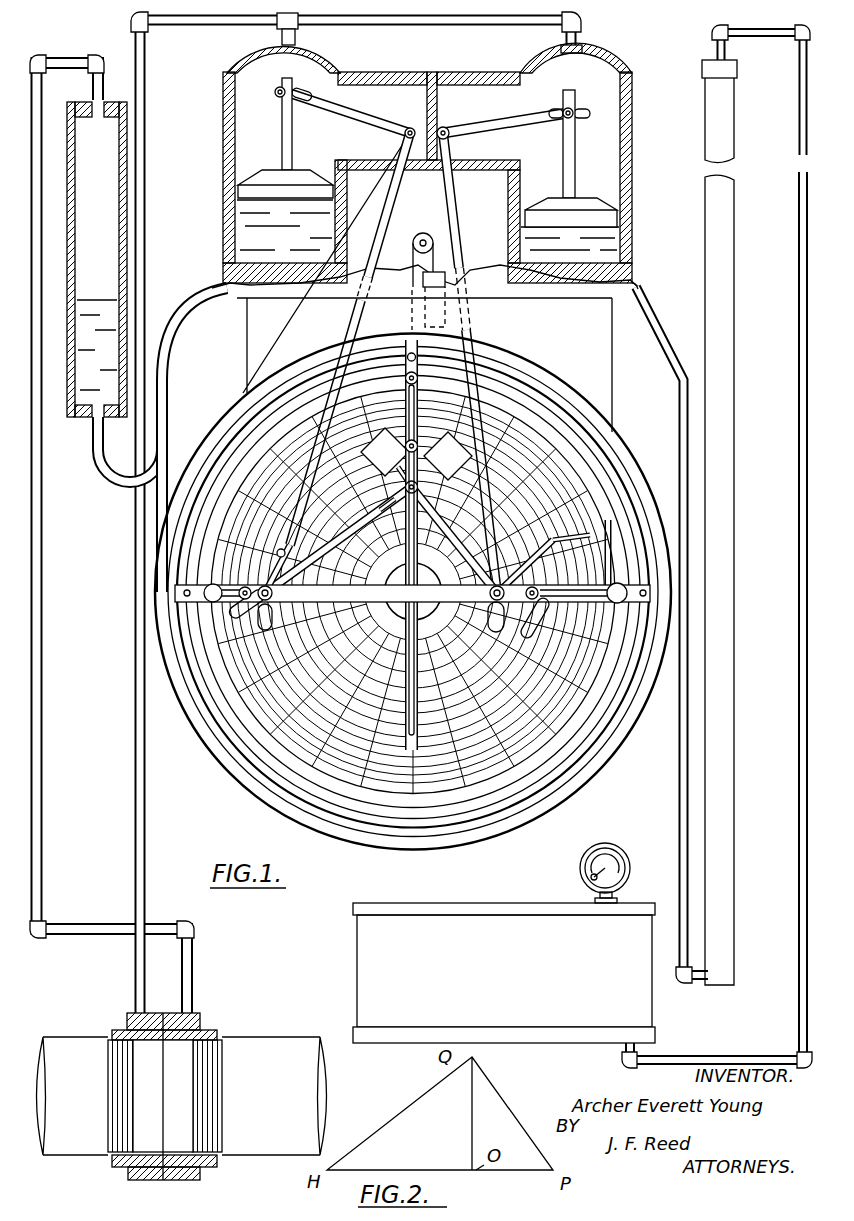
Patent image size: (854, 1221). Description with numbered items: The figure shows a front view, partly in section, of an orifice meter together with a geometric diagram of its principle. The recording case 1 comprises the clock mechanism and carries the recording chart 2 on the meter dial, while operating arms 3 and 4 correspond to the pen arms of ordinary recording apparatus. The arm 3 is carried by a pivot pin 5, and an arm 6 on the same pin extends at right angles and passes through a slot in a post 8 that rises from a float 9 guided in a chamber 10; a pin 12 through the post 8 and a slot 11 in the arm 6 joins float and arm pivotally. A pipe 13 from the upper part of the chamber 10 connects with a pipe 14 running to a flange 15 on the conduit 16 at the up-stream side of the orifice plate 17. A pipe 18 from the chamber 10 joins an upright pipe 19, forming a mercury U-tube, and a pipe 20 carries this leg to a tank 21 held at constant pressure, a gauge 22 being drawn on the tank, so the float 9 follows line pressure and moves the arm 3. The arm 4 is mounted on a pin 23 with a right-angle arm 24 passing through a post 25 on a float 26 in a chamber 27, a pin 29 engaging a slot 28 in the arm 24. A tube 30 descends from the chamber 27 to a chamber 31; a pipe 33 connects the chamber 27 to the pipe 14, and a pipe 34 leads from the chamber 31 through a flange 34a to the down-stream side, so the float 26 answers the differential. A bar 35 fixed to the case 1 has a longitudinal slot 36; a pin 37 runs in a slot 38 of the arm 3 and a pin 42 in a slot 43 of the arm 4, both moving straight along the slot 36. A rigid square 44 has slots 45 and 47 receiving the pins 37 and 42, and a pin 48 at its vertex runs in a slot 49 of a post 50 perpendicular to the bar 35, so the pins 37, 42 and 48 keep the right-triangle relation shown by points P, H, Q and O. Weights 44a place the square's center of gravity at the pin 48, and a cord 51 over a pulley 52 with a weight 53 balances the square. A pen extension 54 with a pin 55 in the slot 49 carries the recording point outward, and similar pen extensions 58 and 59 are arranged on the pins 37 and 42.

The recording case 1 is at (231, 763).
The recording chart 2 is at (390, 793).
The operating arm 3 is at (480, 395).
The operating arm 4 is at (325, 372).
The pivot pin 5 is at (443, 153).
The arm 6 is at (517, 123).
The post 8 is at (576, 140).
The float 9 is at (585, 205).
The chamber 10 is at (612, 168).
The slot 11 is at (553, 111).
The pin 12 is at (571, 110).
The pipe 13 is at (577, 35).
The pipe 14 is at (143, 258).
The flange 15 is at (128, 1030).
The conduit 16 is at (95, 1148).
The orifice plate 17 is at (165, 1080).
The pipe 18 is at (679, 445).
The upright pipe 19 is at (736, 605).
The pipe 20 is at (798, 380).
The tank 21 is at (645, 1010).
The gauge 22 is at (612, 857).
The pin 23 is at (408, 128).
The arm 24 is at (357, 115).
The post 25 is at (282, 121).
The float 26 is at (297, 180).
The chamber 27 is at (228, 168).
The slot 28 is at (312, 98).
The pin 29 is at (276, 93).
The tube 30 is at (167, 356).
The chamber 31 is at (118, 300).
The pipe 33 is at (296, 44).
The pipe 34 is at (40, 510).
The flange 34a is at (200, 1022).
The bar 35 is at (576, 603).
The slot 36 is at (568, 589).
The pin 37 is at (503, 584).
The slot 38 is at (525, 562).
The pin 42 is at (277, 554).
The slot 43 is at (280, 550).
The square 44 is at (337, 528).
The weights 44a is at (372, 447).
The slot 45 is at (455, 537).
The slot 47 is at (370, 522).
The pin 48 is at (402, 487).
The slot 49 is at (419, 410).
The post 50 is at (405, 410).
The cord 51 is at (413, 260).
The pulley 52 is at (426, 236).
The weight 53 is at (446, 277).
The pen extension 54 is at (418, 448).
The pin 55 is at (419, 435).
The pen extension 58 is at (536, 588).
The pen extension 59 is at (243, 588).